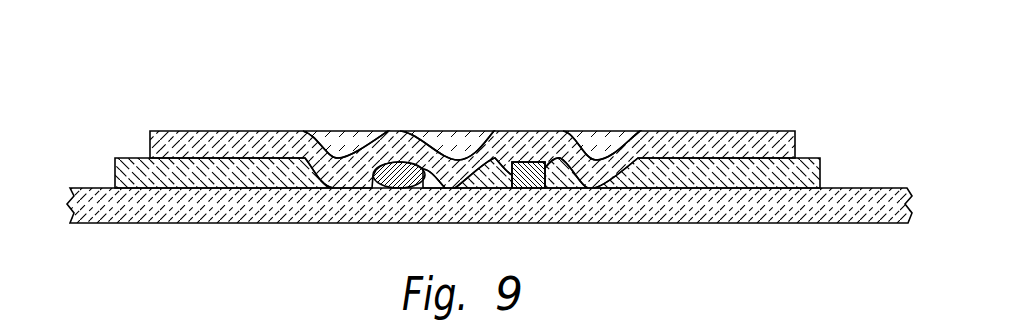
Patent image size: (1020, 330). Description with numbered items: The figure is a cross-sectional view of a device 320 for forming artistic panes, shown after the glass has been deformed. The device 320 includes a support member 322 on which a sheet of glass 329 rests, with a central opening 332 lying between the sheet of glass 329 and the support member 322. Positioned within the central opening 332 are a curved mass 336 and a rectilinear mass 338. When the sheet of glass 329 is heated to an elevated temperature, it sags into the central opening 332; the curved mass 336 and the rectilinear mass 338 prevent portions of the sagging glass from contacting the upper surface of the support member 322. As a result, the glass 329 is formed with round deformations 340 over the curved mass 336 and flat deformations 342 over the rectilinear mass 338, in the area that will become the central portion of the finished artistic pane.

The device 320 is at (81, 138).
The support member 322 is at (636, 186).
The sheet of glass 329 is at (247, 131).
The central opening 332 is at (550, 175).
The curved mass 336 is at (375, 168).
The rectilinear mass 338 is at (493, 168).
The round deformations 340 is at (377, 132).
The flat deformations 342 is at (502, 133).